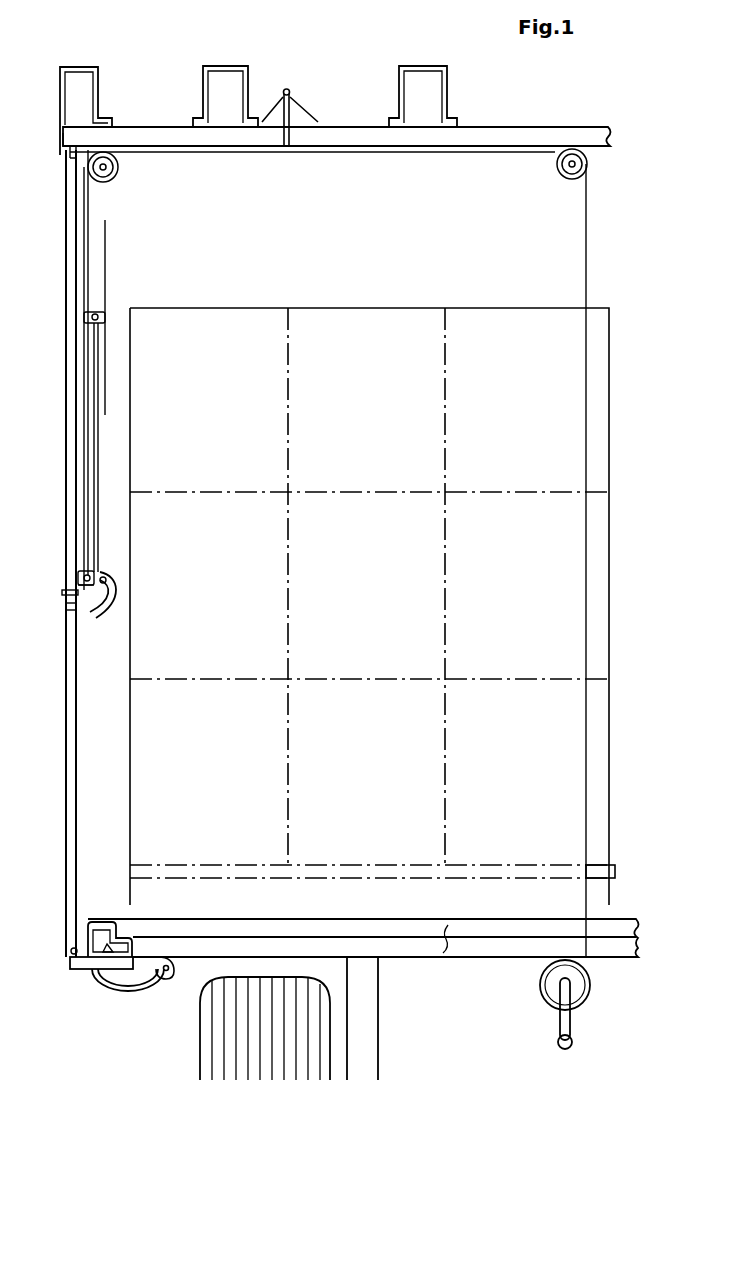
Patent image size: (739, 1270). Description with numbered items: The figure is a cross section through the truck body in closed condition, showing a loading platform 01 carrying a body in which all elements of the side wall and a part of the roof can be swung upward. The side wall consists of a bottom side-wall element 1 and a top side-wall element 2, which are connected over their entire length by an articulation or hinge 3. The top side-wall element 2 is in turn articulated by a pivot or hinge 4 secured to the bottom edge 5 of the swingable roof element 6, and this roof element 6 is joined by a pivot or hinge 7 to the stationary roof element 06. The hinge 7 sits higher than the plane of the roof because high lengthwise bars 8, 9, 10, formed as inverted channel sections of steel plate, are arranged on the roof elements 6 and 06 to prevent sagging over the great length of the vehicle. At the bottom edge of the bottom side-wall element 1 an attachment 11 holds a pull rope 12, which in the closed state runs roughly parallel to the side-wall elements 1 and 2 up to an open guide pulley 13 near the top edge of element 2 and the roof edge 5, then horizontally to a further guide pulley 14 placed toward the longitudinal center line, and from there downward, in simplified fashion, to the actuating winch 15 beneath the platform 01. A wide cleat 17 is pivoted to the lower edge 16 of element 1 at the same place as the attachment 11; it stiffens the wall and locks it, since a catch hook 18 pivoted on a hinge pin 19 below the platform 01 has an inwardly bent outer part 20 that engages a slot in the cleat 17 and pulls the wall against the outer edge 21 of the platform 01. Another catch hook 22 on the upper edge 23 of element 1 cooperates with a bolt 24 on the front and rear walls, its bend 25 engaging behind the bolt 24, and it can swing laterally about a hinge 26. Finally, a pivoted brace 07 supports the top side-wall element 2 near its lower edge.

The bottom side-wall element 1 is at (74, 734).
The top side-wall element 2 is at (68, 280).
The articulation or hinge 3 is at (72, 584).
The pivot or hinge 4 is at (66, 153).
The bottom edge of the roof element 5 is at (63, 140).
The swingable roof element 6 is at (152, 127).
The stationary roof element 06 is at (530, 126).
The pivot or hinge 7 is at (287, 92).
The lengthwise bar 8 is at (68, 84).
The lengthwise bar 9 is at (225, 80).
The lengthwise bar 10 is at (425, 82).
The attachment for a pull rope 11 is at (72, 951).
The pull rope 12 is at (86, 205).
The open guide pulley 13 is at (110, 172).
The guide pulley 14 is at (560, 168).
The actuating winch 15 is at (556, 992).
The lower edge of the bottom side-wall element 16 is at (140, 957).
The wide cleat 17 is at (94, 969).
The catch hook 18 is at (140, 990).
The hinge pin 19 is at (166, 980).
The inwardly bent outer part of the catch hook 20 is at (113, 950).
The outer edge of the platform 21 is at (102, 924).
The catch hook 22 is at (102, 612).
The upper edge of the bottom wall element 23 is at (62, 594).
The bolt 24 is at (92, 572).
The bend of the hook 25 is at (108, 582).
The hinge 26 is at (64, 608).
The loading platform 01 is at (446, 952).
The pivoted brace 07 is at (98, 374).